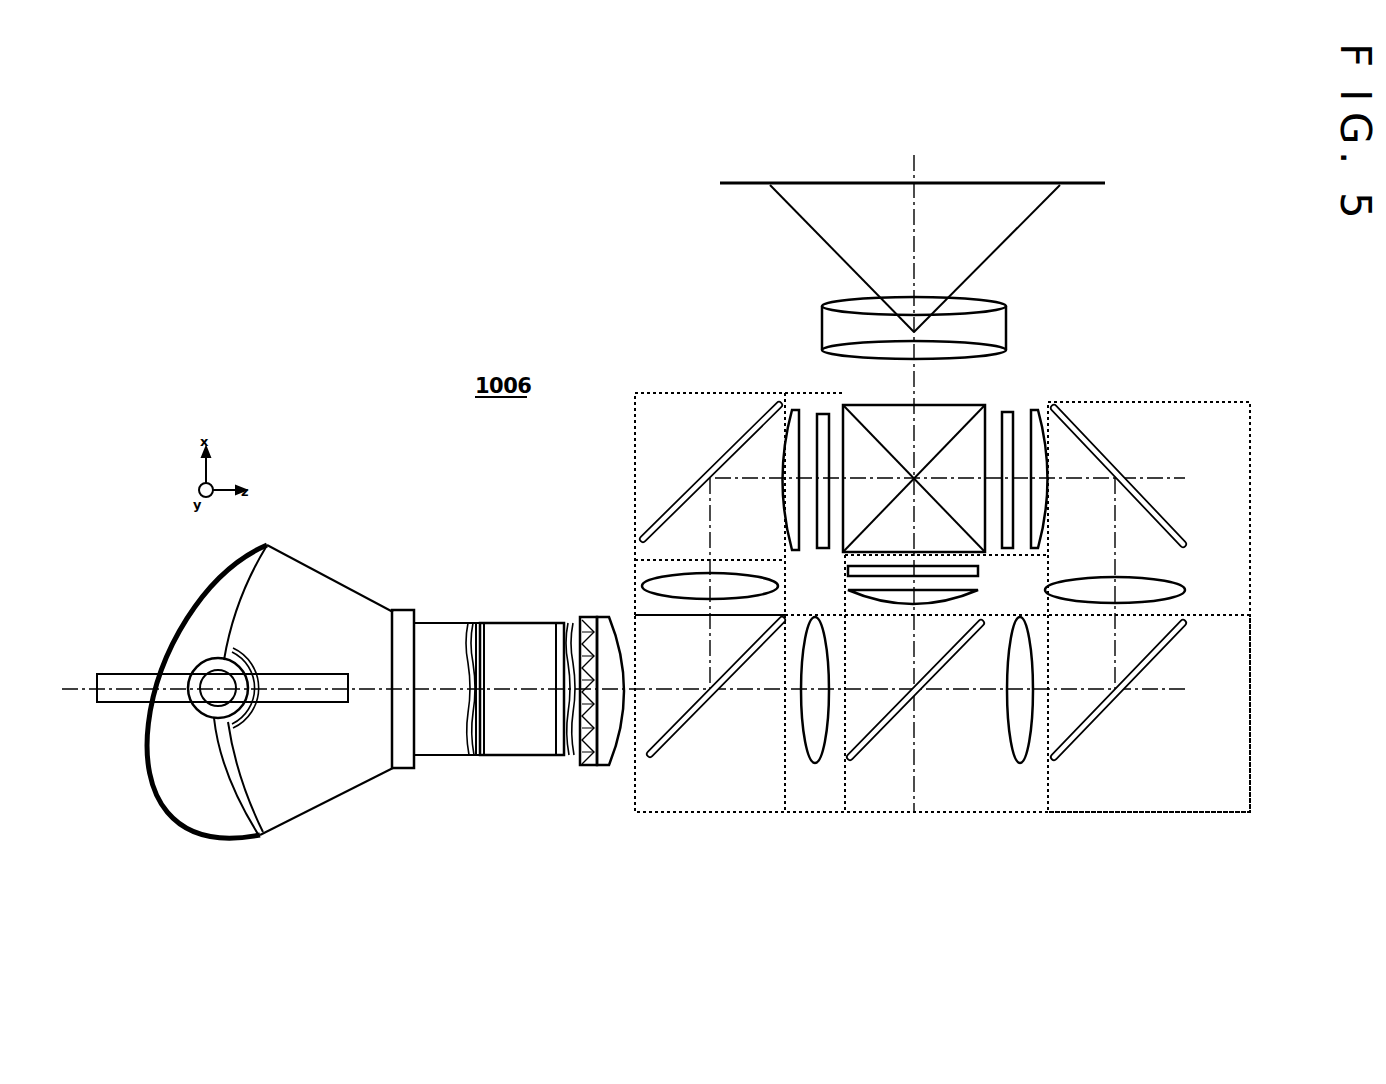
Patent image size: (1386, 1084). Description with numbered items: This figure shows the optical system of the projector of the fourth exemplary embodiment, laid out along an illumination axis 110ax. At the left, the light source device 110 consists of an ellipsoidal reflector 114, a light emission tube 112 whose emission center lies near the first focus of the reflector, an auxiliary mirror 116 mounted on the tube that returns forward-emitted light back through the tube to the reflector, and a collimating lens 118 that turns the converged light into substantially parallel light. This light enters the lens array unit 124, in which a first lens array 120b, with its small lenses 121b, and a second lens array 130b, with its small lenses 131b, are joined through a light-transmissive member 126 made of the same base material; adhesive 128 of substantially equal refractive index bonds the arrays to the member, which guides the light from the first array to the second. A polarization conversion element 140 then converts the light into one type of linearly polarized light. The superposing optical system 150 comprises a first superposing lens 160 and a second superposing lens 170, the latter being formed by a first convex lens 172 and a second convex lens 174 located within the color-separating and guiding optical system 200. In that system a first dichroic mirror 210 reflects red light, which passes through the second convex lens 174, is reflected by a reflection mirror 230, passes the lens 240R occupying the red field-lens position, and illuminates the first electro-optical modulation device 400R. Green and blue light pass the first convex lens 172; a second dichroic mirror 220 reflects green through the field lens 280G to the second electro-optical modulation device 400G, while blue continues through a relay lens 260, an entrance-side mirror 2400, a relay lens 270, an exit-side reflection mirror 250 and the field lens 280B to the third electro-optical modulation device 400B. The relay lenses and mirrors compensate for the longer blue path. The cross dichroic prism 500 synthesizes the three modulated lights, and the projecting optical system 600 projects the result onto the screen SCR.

The light source device 110 is at (365, 866).
The illumination optical axis 110ax is at (81, 686).
The light emission tube 112 is at (229, 728).
The ellipsoidal reflector 114 is at (208, 798).
The auxiliary mirror 116 is at (275, 770).
The collimating lens 118 is at (398, 770).
The first lens array 120b is at (470, 757).
The polarization separation film 121b is at (467, 623).
The lens array unit 124 is at (522, 555).
The light-transmissive member 126 is at (519, 757).
The adhesive 128 is at (518, 623).
The second lens array 130b is at (569, 757).
The polarization separation film 131b is at (569, 623).
The polarization conversion element 140 is at (592, 617).
The superposing optical system 150 is at (815, 860).
The first superposing lens 160 is at (617, 768).
The second superposing lens 170 is at (816, 812).
The first convex lens 172 is at (818, 765).
The second convex lens 174 is at (780, 588).
The color-separating and guiding optical system 200 is at (1003, 812).
The first dichroic mirror 210 is at (670, 744).
The second dichroic mirror 220 is at (870, 744).
The reflection mirror 230 is at (686, 498).
The field lens for red light 240R is at (793, 405).
The exit-side reflection mirror 250 is at (1162, 522).
The relay lens 260 is at (1020, 764).
The relay lens 270 is at (1185, 590).
The field lens 280B is at (1043, 410).
The field lens 280G is at (985, 608).
The reflecting mirror 2400 is at (1078, 744).
The first electro-optical modulation device 400R is at (820, 410).
The second electro-optical modulation device 400G is at (1012, 575).
The third electro-optical modulation device 400B is at (1008, 410).
The cross dichroic prism 500 is at (844, 414).
The projecting optical system 600 is at (1006, 337).
The screen SCR is at (754, 186).